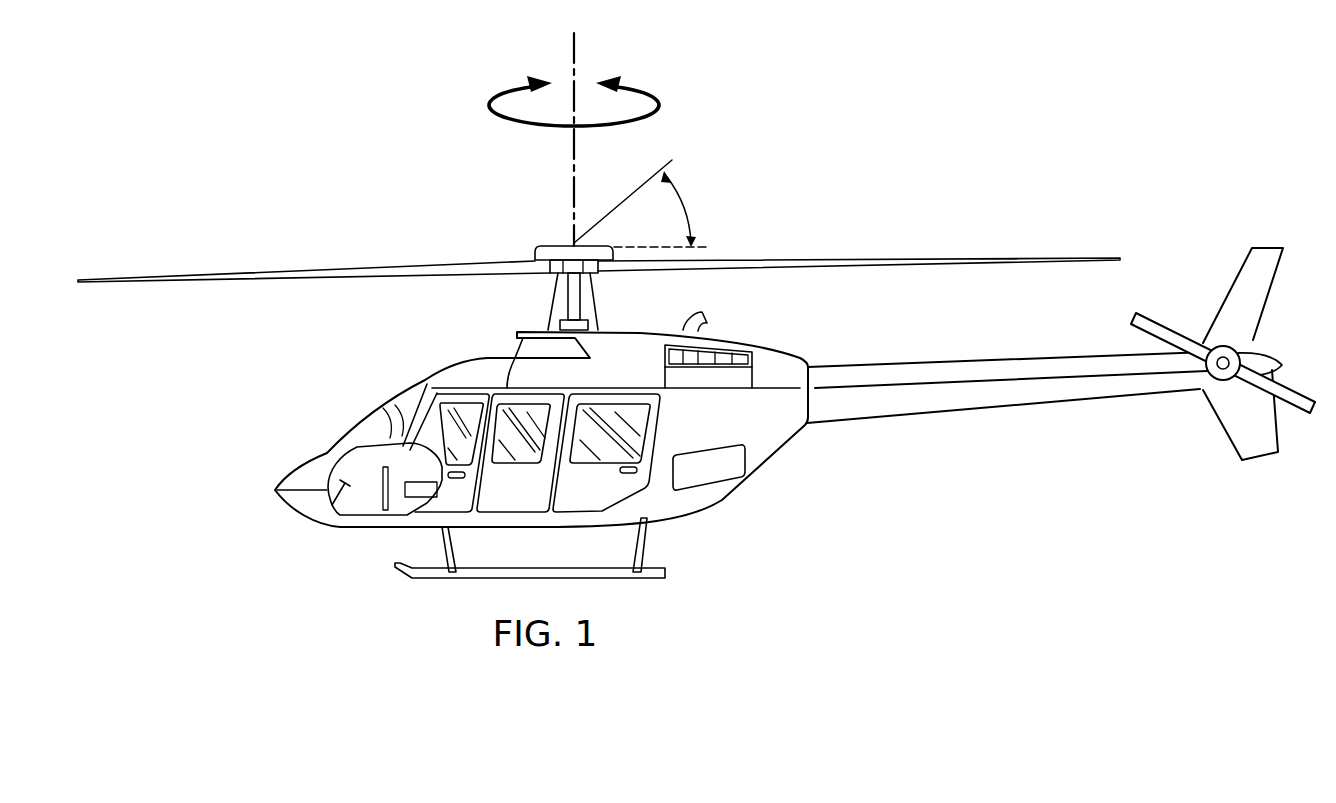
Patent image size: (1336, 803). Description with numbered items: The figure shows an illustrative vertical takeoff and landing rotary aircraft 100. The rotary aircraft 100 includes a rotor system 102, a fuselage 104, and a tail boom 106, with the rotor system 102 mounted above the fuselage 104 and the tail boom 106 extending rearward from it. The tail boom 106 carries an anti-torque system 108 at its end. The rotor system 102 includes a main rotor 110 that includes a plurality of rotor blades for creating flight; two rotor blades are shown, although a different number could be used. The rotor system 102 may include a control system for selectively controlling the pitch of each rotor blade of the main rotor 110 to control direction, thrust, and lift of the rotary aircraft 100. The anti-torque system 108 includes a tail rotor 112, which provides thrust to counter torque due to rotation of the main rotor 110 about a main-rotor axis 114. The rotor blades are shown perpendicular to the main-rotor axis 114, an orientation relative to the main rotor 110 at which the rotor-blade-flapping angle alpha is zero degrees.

The rotary aircraft 100 is at (338, 112).
The rotor system 102 is at (556, 229).
The fuselage 104 is at (403, 390).
The tail boom 106 is at (939, 413).
The anti-torque system 108 is at (1250, 320).
The main rotor 110 is at (840, 259).
The tail rotor 112 is at (1165, 322).
The main-rotor axis 114 is at (572, 46).